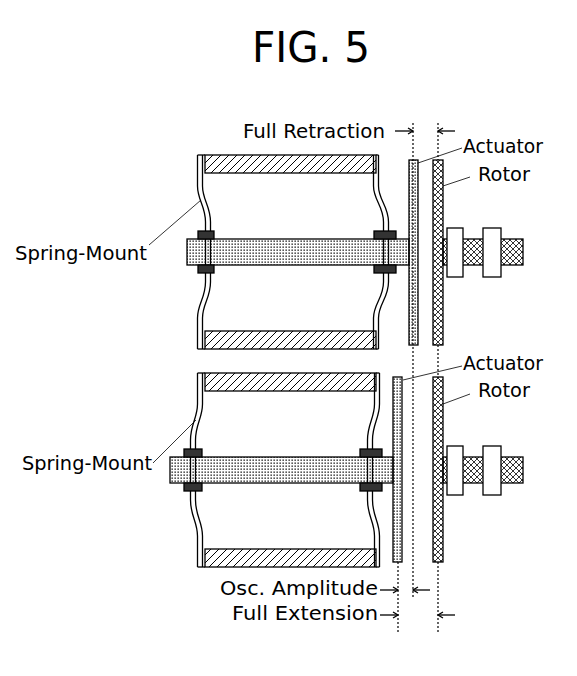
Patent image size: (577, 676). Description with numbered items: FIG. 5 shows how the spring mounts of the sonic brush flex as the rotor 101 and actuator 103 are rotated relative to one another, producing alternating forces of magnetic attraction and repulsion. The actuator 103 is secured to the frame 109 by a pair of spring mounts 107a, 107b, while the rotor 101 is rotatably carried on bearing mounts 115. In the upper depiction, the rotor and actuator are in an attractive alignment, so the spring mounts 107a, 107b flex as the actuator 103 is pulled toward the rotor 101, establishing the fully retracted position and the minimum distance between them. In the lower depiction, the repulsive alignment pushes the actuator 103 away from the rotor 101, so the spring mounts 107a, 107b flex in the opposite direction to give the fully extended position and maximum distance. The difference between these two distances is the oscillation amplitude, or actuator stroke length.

The rotor 101 is at (443, 316).
The actuator 103 is at (305, 265).
The spring mount 107a is at (375, 194).
The spring mount 107b is at (198, 308).
The frame 109 is at (305, 173).
The bearing mounts 115 is at (451, 229).